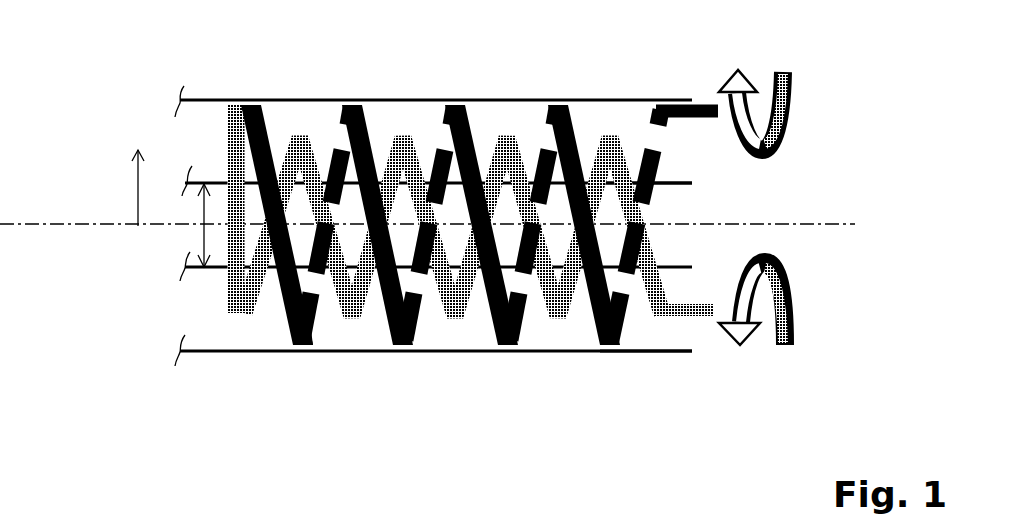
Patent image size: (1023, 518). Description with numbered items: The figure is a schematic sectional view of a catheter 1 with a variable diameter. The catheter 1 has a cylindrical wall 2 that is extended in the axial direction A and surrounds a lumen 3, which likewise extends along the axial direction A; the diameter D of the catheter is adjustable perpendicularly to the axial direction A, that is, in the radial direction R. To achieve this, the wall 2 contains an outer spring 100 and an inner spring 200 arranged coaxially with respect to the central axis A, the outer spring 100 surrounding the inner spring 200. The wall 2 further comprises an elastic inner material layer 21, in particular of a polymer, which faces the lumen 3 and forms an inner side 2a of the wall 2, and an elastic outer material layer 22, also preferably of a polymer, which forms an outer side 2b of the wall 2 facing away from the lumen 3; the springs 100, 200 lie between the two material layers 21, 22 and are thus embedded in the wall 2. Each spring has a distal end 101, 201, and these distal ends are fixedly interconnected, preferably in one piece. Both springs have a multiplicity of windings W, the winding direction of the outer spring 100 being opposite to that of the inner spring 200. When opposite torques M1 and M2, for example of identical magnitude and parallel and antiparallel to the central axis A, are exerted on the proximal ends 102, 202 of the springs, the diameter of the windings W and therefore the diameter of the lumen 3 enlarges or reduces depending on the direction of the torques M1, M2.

The catheter 1 is at (458, 260).
The wall 2 is at (460, 272).
The inner side of the wall 2a is at (678, 183).
The outer side of the wall 2b is at (570, 356).
The inner material layer 21 is at (215, 182).
The outer material layer 22 is at (462, 353).
The lumen 3 is at (282, 336).
The outer spring 100 is at (479, 239).
The distal end of the outer spring 101 is at (259, 118).
The proximal end of the outer spring 102 is at (703, 102).
The inner spring 200 is at (442, 251).
The distal end of the inner spring 201 is at (243, 312).
The proximal end of the inner spring 202 is at (712, 313).
The windings W is at (571, 122).
The diameter D is at (195, 225).
The radial direction R is at (129, 188).
The axial direction A is at (427, 243).
The torque M1 is at (779, 110).
The torque M2 is at (779, 303).